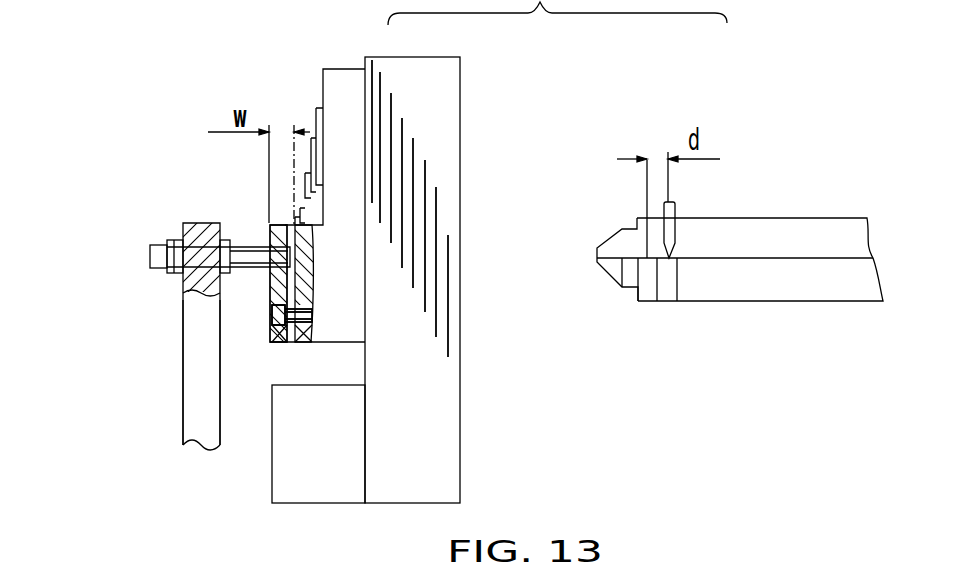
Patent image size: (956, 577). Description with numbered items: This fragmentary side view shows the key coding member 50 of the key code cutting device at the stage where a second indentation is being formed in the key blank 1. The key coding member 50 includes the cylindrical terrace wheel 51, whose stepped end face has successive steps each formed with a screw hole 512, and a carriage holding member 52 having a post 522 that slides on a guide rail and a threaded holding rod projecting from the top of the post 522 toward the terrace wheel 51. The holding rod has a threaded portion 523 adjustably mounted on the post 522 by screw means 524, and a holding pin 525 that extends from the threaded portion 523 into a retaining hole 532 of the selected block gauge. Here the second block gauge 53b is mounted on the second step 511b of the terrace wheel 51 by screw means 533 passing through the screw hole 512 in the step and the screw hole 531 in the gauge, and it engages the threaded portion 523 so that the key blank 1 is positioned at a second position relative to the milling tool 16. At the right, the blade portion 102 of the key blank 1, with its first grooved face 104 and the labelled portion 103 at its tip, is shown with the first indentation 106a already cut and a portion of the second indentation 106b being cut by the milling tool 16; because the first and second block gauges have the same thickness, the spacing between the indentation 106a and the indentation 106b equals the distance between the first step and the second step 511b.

The key coding member 50 is at (462, 132).
The terrace wheel 51 is at (340, 78).
The second step 511b is at (287, 275).
The screw hole 512 is at (303, 327).
The carriage holding member 52 is at (183, 418).
The post 522 is at (193, 368).
The threaded portion 523 is at (250, 247).
The screw means 524 is at (167, 247).
The holding pin 525 is at (270, 223).
The retaining hole 532 is at (278, 283).
The second block gauge 53b is at (272, 292).
The screw means 533 is at (276, 325).
The screw hole 531 is at (292, 315).
The key blank 1 is at (870, 300).
The blade portion 102 is at (803, 300).
The nose portion 103 is at (625, 300).
The first grooved face 104 is at (780, 233).
The first indentation 106a is at (652, 300).
The second indentation 106b is at (695, 300).
The milling tool 16 is at (673, 210).